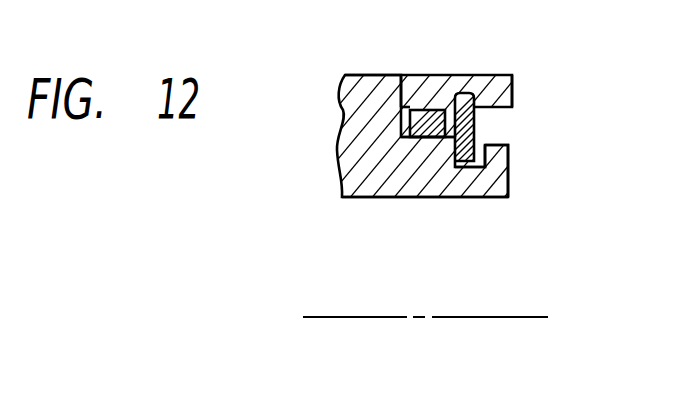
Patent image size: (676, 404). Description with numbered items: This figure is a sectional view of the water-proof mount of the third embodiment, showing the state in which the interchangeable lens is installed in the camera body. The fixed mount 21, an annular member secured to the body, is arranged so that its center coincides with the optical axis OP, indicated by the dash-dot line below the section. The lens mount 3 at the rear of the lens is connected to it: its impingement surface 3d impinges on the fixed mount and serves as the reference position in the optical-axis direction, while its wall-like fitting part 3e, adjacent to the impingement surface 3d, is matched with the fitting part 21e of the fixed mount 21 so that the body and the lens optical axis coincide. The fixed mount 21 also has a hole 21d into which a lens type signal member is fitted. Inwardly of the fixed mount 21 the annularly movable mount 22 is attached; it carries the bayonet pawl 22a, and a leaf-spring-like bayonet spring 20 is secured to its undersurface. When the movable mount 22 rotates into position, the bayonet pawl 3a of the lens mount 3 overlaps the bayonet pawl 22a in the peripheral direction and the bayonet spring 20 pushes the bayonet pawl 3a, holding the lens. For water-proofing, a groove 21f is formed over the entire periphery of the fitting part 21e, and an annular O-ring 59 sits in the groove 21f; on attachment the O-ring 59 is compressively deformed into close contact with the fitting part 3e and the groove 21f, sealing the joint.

The lens mount 3 is at (368, 190).
The bayonet pawl 3a is at (508, 155).
The impingement surface 3d is at (379, 80).
The fitting part 3e is at (401, 138).
The bayonet spring 20 is at (497, 187).
The fixed mount 21 is at (442, 76).
The hole 21d is at (418, 76).
The fitting part 21e is at (400, 101).
The groove 21f is at (500, 76).
The movable mount 22 is at (476, 118).
The bayonet pawl 22a is at (465, 168).
The O-ring 59 is at (418, 138).
The optical axis OP is at (444, 316).